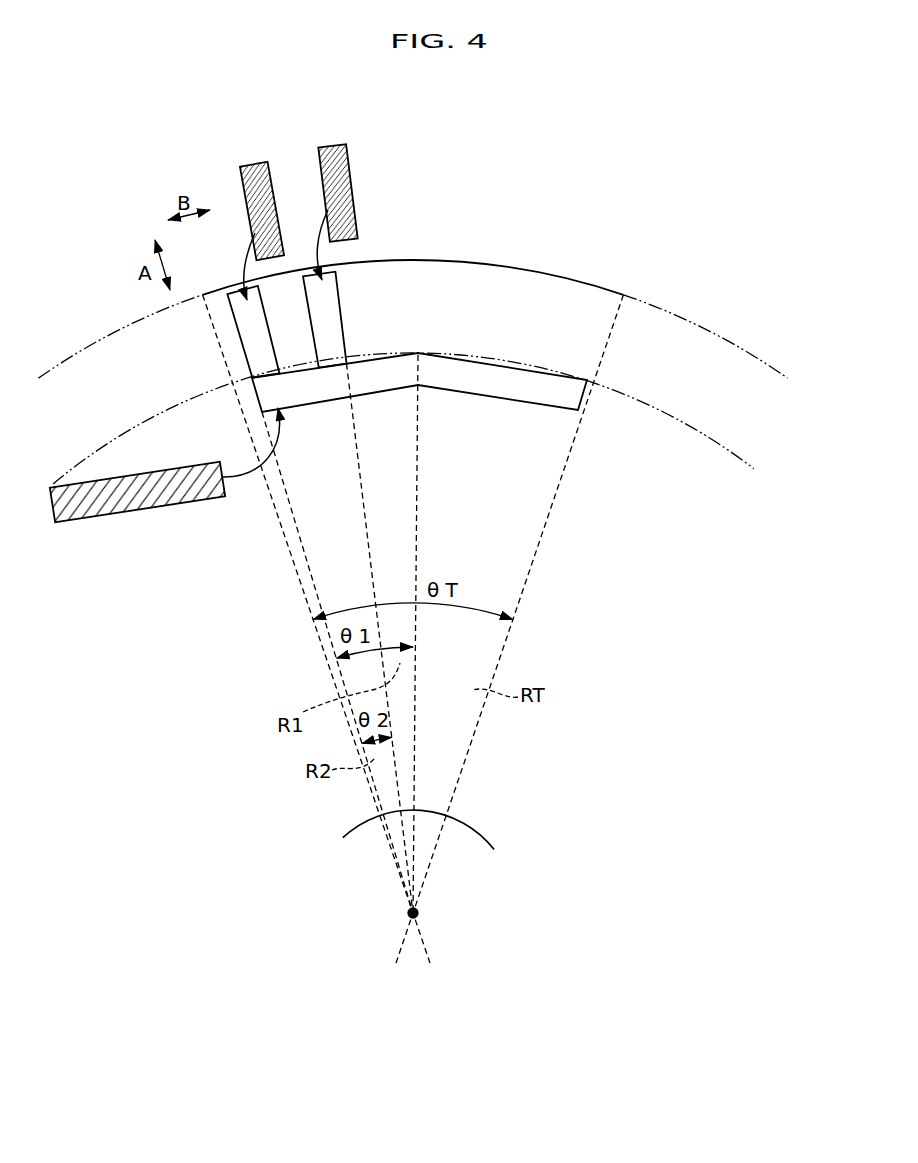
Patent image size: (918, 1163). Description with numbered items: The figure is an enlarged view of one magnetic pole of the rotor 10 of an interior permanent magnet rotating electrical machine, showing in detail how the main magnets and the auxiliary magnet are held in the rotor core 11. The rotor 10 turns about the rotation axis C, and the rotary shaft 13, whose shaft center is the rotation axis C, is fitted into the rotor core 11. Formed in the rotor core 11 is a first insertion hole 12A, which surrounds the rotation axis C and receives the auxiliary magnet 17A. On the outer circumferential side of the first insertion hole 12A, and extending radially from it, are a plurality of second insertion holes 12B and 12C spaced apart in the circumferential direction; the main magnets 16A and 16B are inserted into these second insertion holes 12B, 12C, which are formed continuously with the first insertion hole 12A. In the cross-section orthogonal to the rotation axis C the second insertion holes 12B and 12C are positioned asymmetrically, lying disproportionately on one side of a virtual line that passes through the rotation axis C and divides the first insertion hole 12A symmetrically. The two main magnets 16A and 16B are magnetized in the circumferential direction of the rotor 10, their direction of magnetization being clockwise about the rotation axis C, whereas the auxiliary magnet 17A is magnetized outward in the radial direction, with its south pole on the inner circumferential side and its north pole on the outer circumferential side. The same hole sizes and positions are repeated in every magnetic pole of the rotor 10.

The rotor 10 is at (610, 244).
The rotor core 11 is at (374, 421).
The first insertion hole 12A is at (350, 393).
The second insertion hole 12B is at (333, 303).
The second insertion hole 12C is at (248, 348).
The rotary shaft 13 is at (462, 819).
The main magnet 16A is at (250, 167).
The main magnet 16B is at (334, 153).
The auxiliary magnet 17A is at (128, 493).
The rotation axis C is at (420, 912).